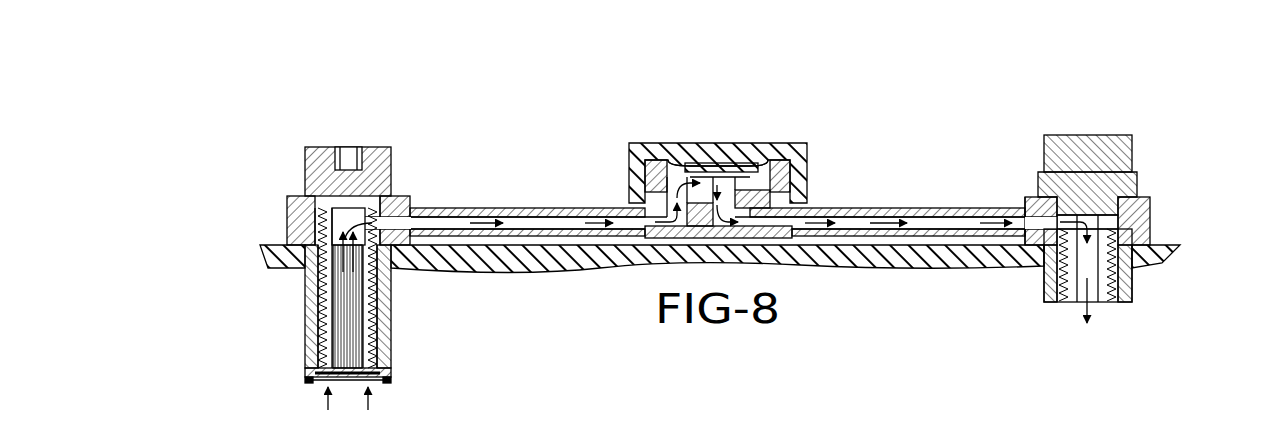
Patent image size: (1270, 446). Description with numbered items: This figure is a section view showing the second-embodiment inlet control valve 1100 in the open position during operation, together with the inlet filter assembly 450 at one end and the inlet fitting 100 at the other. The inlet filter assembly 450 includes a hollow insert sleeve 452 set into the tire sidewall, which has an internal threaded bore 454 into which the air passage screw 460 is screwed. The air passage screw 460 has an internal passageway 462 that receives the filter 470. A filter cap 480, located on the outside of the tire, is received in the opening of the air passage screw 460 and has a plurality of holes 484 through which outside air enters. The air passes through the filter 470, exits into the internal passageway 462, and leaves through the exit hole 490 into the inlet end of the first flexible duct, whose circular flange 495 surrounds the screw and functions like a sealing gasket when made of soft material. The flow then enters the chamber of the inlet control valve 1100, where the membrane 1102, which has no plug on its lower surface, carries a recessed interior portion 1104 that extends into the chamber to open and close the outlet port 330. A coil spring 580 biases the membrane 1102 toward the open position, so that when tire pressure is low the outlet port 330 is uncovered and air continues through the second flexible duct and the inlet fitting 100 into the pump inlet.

The inlet filter assembly 450 is at (280, 170).
The air passage screw 460 is at (393, 152).
The internal passageway 462 is at (350, 213).
The circular flange 495 is at (304, 194).
The exit hole 490 is at (327, 218).
The internal threaded bore 454 is at (320, 300).
The filter 470 is at (333, 318).
The insert sleeve 452 is at (392, 322).
The filter cap 480 is at (393, 378).
The holes 484 is at (327, 382).
The inlet control valve 1100 is at (618, 127).
The membrane 1102 is at (778, 143).
The recessed interior portion 1104 is at (688, 168).
The outlet port 330 is at (725, 196).
The coil spring 580 is at (735, 190).
The inlet fitting 100 is at (1148, 147).